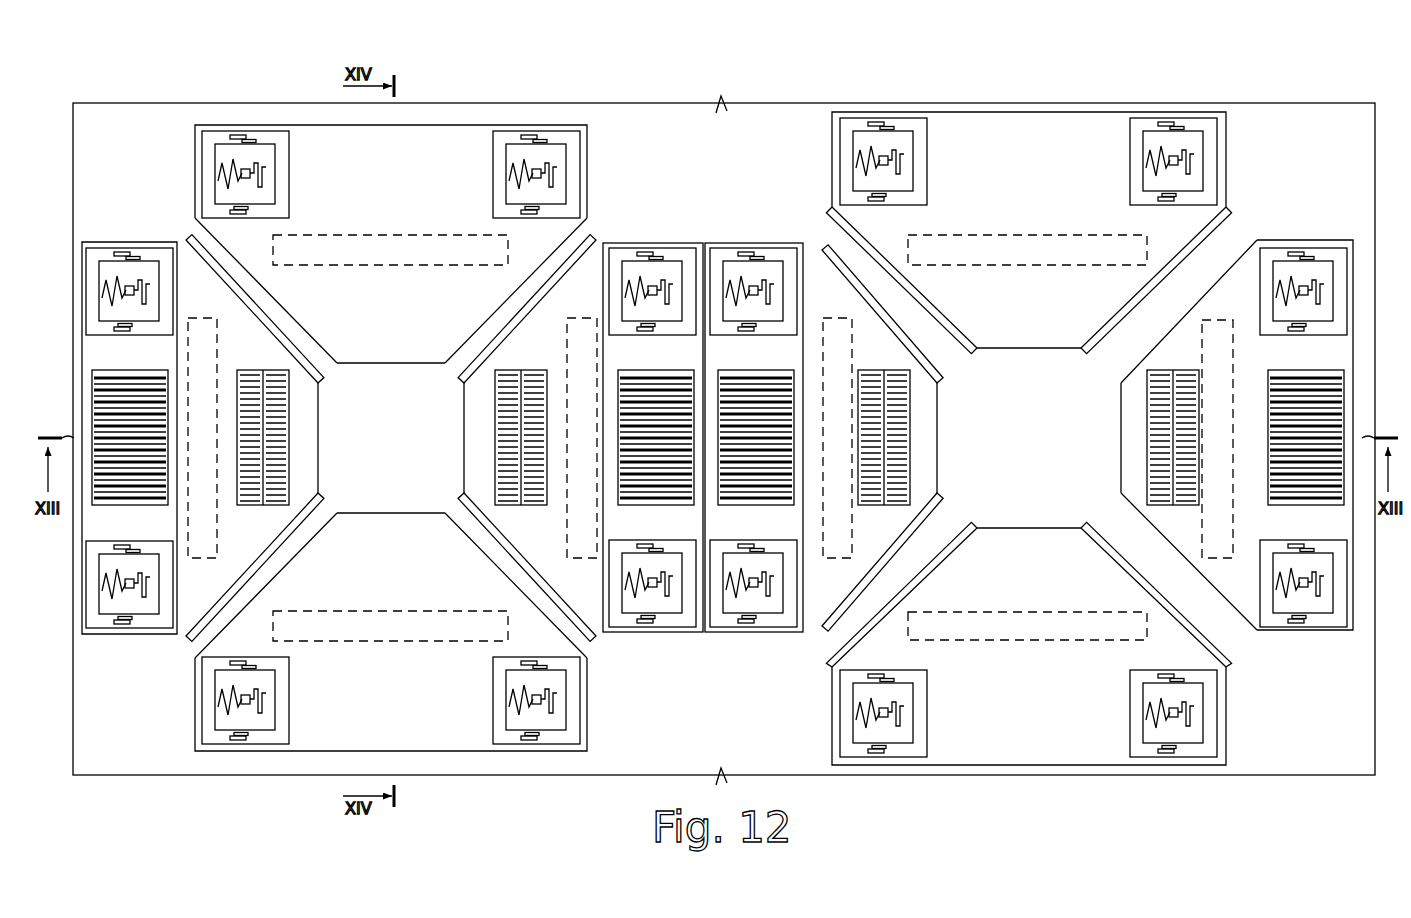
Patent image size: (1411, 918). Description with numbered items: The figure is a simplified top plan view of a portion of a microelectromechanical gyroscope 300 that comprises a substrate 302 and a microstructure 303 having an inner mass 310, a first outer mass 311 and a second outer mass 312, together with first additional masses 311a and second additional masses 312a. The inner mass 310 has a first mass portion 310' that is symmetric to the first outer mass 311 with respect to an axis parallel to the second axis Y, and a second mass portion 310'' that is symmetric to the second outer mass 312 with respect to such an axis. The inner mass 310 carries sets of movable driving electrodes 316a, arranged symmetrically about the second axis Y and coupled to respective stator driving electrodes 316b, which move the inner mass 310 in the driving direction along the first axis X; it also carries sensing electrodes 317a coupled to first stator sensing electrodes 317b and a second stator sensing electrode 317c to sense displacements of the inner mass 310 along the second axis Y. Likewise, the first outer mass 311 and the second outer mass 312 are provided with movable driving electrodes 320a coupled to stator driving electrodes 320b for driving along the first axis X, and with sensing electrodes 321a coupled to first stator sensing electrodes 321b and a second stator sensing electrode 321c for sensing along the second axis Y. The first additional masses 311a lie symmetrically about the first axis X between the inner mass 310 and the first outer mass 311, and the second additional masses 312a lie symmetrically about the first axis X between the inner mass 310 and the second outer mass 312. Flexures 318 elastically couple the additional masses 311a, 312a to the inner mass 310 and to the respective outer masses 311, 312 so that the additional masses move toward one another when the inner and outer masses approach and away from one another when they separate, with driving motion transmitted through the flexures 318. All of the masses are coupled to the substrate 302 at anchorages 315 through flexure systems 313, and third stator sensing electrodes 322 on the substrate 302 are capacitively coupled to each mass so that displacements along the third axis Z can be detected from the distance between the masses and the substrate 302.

The microelectromechanical gyroscope 300 is at (185, 798).
The substrate 302 is at (722, 103).
The microstructure 303 is at (1272, 130).
The inner mass 310 is at (719, 330).
The first mass portion 310' is at (653, 408).
The second mass portion 310'' is at (754, 408).
The first outer mass 311 is at (95, 634).
The first additional masses 311a is at (425, 125).
The second outer mass 312 is at (1352, 698).
The second additional masses 312a is at (1046, 112).
The flexure systems 313 is at (287, 212).
The anchorages 315 is at (250, 170).
The movable driving electrodes 316a is at (495, 405).
The stator driving electrodes 316b is at (495, 475).
The sensing electrodes 317a is at (618, 400).
The first stator sensing electrodes 317b is at (652, 373).
The second stator sensing electrode 317c is at (652, 508).
The flexures 318 is at (272, 305).
The movable driving electrodes 320a is at (290, 398).
The stator driving electrodes 320b is at (290, 477).
The sensing electrodes 321a is at (167, 412).
The first stator sensing electrodes 321b is at (108, 498).
The second stator sensing electrode 321c is at (120, 388).
The third stator sensing electrodes 322 is at (455, 266).